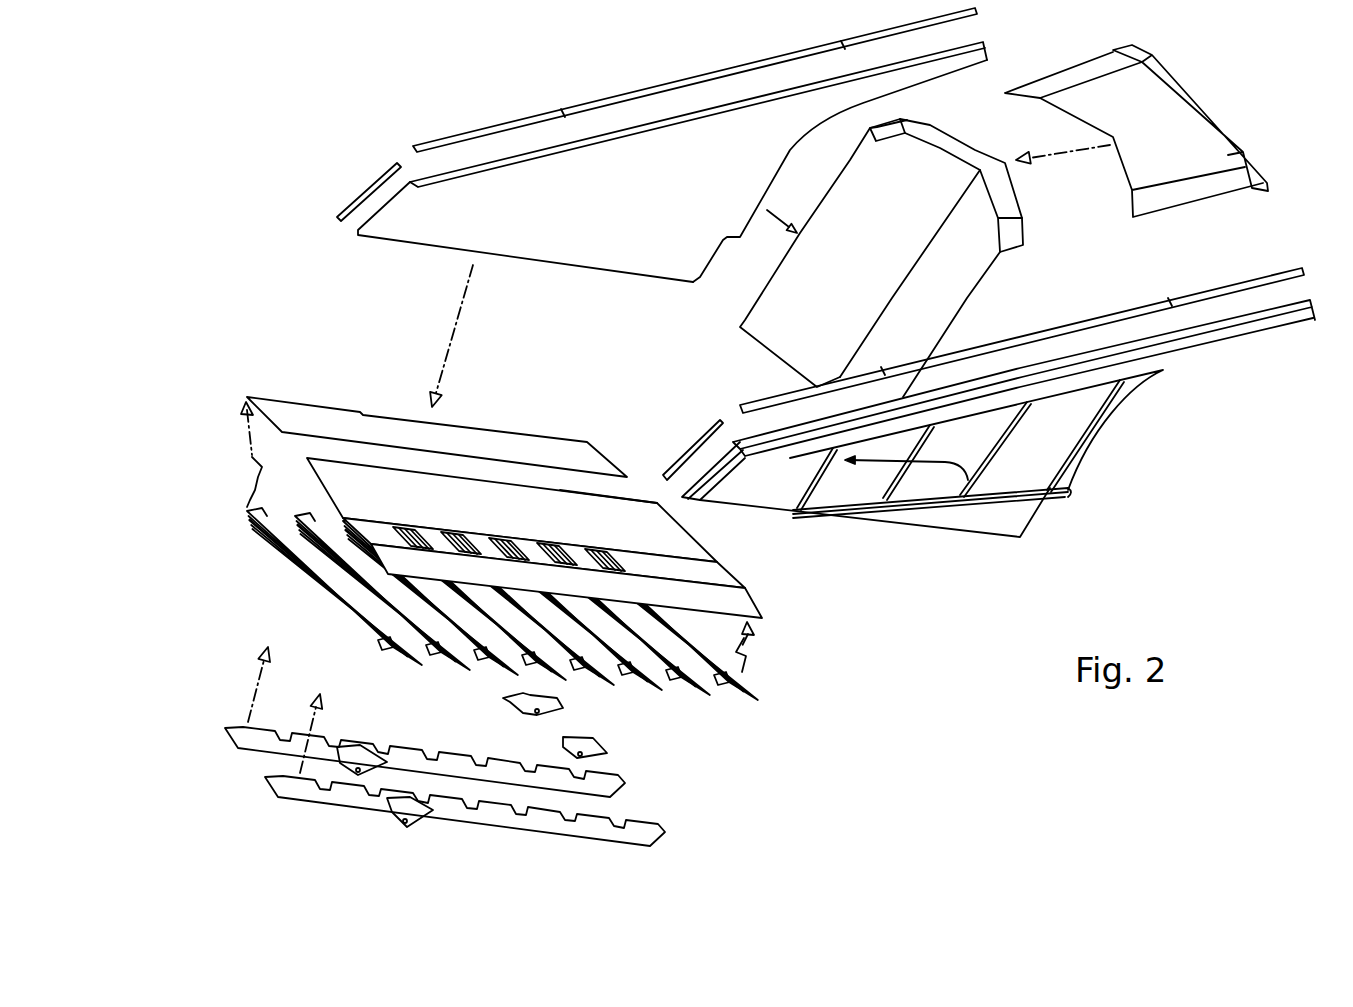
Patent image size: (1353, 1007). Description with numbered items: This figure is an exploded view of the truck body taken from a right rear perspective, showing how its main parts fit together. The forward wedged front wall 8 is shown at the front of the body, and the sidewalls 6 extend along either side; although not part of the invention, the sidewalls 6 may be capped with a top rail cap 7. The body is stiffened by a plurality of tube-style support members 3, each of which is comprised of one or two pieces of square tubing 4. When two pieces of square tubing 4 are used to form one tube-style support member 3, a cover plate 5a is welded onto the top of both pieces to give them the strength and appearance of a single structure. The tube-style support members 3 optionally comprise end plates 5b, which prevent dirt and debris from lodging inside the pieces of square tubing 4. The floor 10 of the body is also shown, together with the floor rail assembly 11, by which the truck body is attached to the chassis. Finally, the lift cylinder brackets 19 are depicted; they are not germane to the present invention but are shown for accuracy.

The tube-style support member 3 is at (978, 423).
The square tubing 4 is at (307, 518).
The cover plate 5a is at (430, 667).
The end plate 5b is at (597, 693).
The sidewall 6 is at (535, 187).
The top rail cap 7 is at (386, 168).
The forward wedged front wall 8 is at (860, 190).
The floor 10 is at (325, 420).
The floor rail assembly 11 is at (280, 793).
The lift cylinder bracket 19 is at (563, 745).